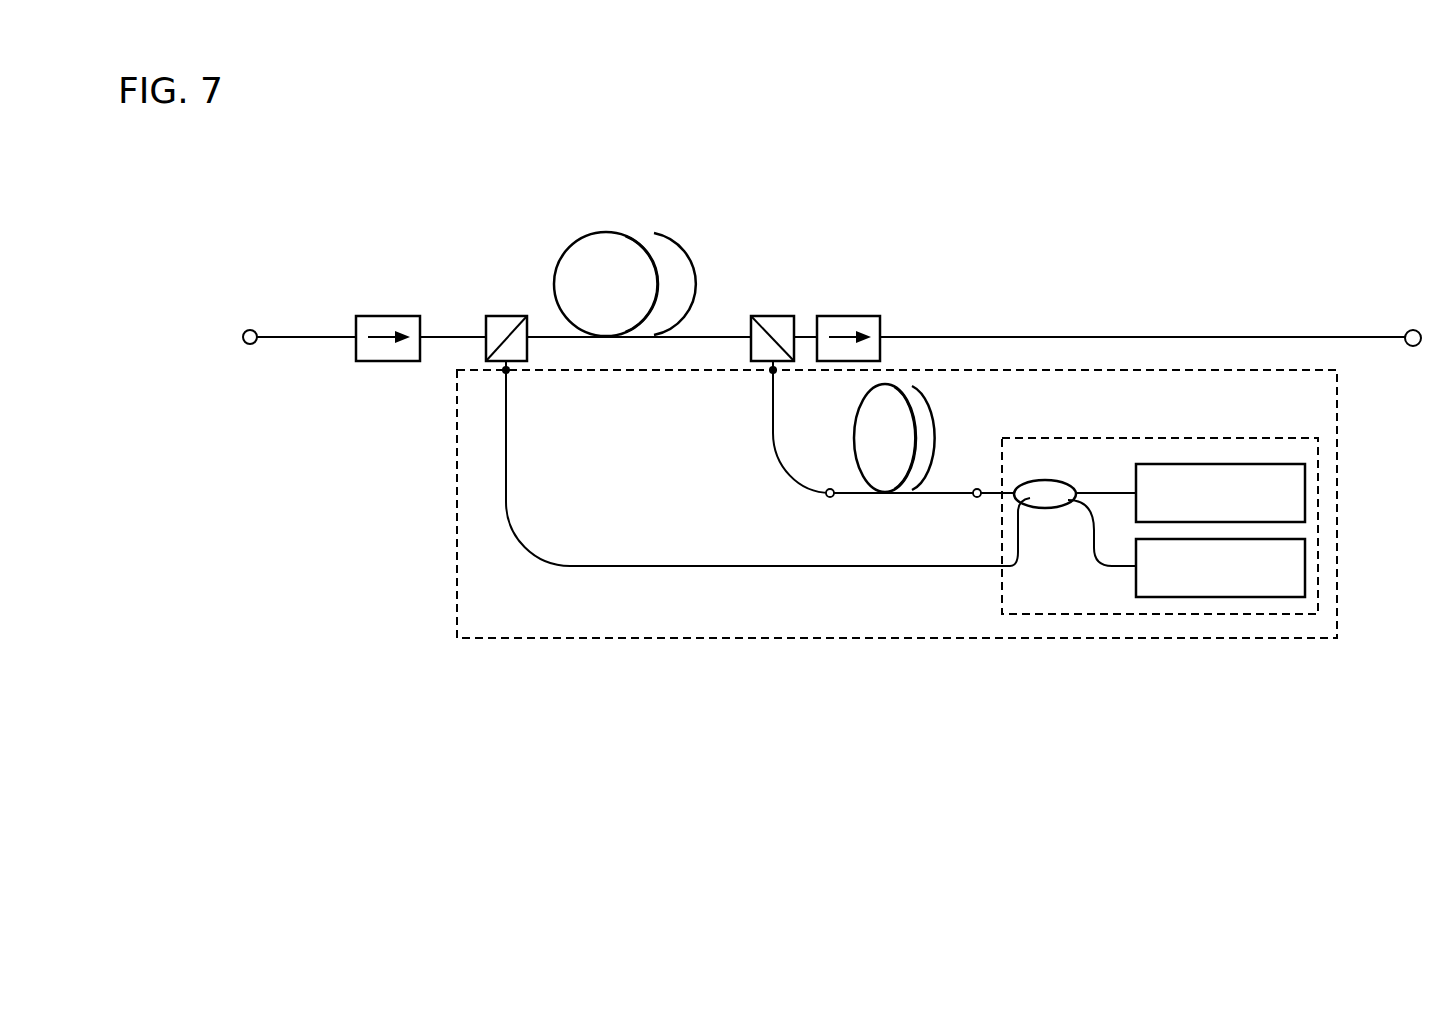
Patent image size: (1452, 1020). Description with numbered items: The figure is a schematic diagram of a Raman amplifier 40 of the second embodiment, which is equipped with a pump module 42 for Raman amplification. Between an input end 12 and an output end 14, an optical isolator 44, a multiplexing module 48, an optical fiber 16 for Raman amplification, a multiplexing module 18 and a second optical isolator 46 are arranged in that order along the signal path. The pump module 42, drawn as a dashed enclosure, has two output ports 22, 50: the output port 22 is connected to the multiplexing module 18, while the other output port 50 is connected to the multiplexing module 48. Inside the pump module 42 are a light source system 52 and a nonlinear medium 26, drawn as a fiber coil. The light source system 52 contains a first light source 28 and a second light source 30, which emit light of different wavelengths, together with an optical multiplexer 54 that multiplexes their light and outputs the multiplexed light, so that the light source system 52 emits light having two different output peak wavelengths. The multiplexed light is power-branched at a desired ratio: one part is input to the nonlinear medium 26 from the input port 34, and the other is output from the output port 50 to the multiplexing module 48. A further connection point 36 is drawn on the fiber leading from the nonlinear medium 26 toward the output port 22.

The input end 12 is at (250, 345).
The output end 14 is at (1412, 346).
The optical fiber for Raman amplification 16 is at (603, 232).
The multiplexing module 18 is at (774, 316).
The output port 22 is at (770, 372).
The nonlinear medium 26 is at (878, 500).
The first light source 28 is at (1305, 494).
The second light source 30 is at (1305, 567).
The input port 34 is at (977, 500).
The connection point 36 is at (830, 500).
The Raman amplifier 40 is at (1128, 178).
The pump module for Raman amplification 42 is at (866, 640).
The optical isolator 44 is at (388, 362).
The optical isolator 46 is at (848, 316).
The multiplexing module 48 is at (508, 316).
The output port 50 is at (502, 372).
The light source system 52 is at (1046, 616).
The optical multiplexer 54 is at (1045, 508).